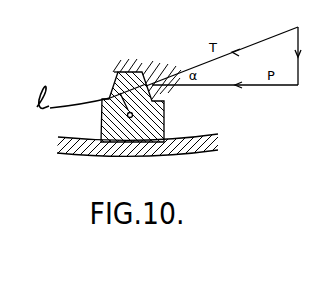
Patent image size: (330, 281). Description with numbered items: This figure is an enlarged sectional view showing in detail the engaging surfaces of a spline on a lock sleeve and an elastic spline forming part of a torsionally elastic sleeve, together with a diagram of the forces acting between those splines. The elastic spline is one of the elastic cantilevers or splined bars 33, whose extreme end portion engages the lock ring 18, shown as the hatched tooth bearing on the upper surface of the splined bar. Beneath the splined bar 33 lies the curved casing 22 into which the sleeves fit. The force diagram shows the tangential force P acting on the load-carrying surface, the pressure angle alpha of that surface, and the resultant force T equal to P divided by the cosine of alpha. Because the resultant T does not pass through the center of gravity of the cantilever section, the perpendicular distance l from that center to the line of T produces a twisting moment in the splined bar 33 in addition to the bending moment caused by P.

The lock ring 18 is at (147, 74).
The splined bars 33 is at (150, 125).
The casing 22 is at (207, 146).